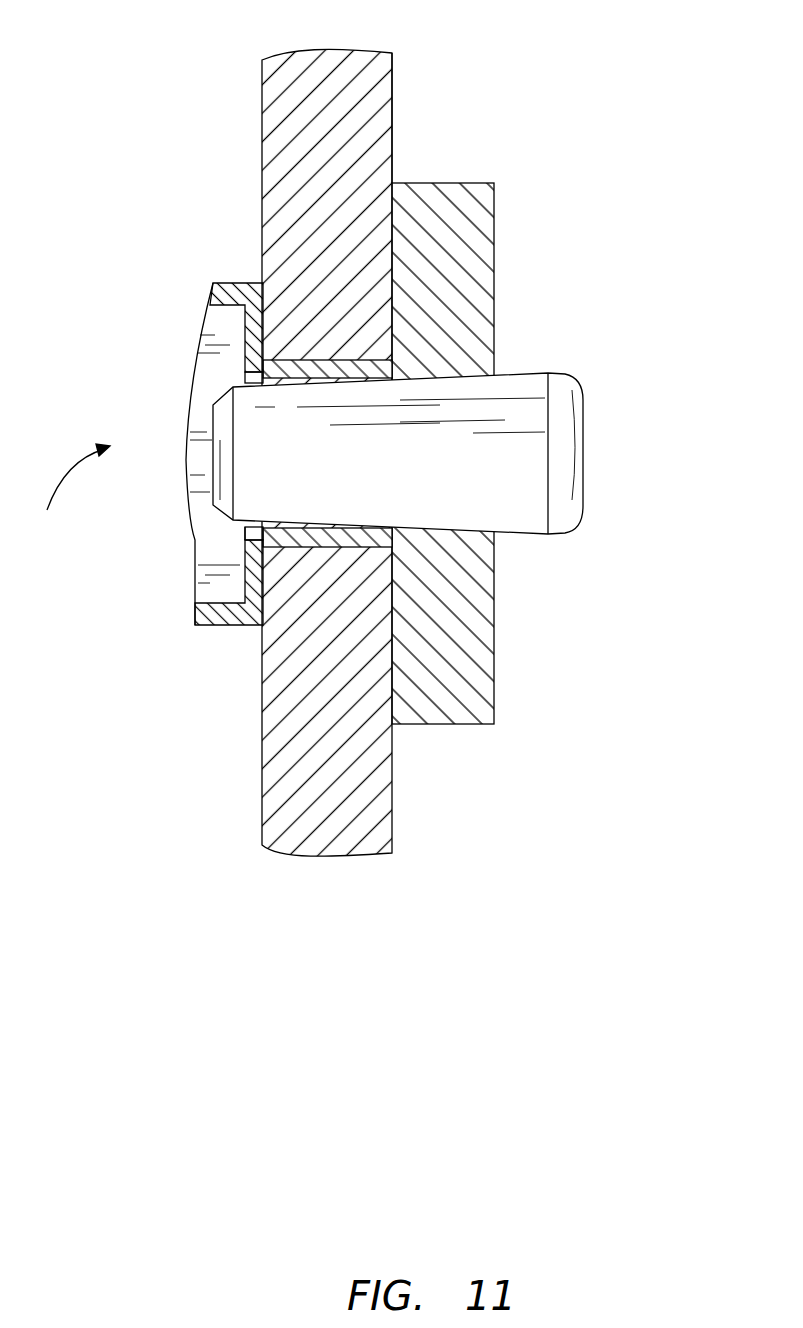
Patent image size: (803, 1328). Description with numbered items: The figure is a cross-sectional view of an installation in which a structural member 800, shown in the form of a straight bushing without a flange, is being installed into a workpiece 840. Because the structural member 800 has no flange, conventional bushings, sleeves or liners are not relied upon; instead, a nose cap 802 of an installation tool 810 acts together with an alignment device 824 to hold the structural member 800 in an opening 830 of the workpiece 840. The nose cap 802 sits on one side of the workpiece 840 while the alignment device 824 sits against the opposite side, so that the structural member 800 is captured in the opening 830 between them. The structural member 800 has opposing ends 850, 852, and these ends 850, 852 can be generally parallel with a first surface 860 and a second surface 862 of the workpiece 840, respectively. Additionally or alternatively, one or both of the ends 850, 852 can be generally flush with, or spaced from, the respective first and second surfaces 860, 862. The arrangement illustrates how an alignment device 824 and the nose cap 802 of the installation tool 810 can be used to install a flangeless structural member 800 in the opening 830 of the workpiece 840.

The structural member 800 is at (343, 547).
The nose cap 802 is at (240, 283).
The installation tool 810 is at (66, 494).
The alignment device 824 is at (495, 200).
The opening 830 is at (338, 362).
The workpiece 840 is at (393, 92).
The end 850 is at (247, 532).
The end 852 is at (393, 535).
The first surface 860 is at (262, 85).
The second surface 862 is at (393, 125).